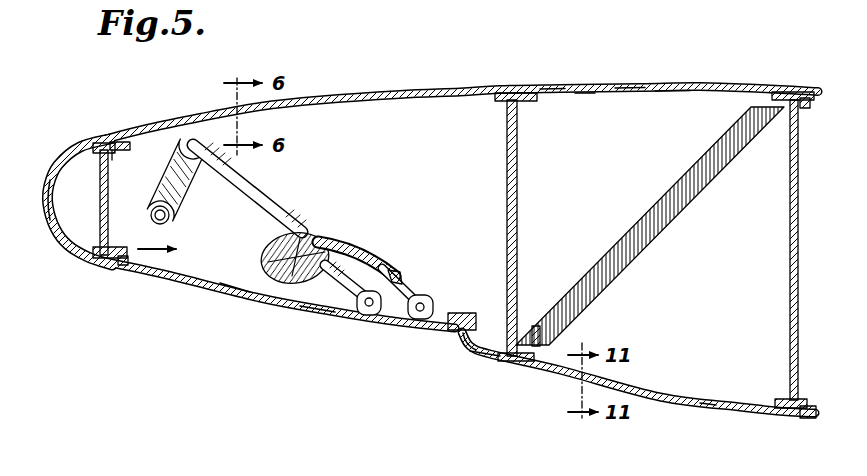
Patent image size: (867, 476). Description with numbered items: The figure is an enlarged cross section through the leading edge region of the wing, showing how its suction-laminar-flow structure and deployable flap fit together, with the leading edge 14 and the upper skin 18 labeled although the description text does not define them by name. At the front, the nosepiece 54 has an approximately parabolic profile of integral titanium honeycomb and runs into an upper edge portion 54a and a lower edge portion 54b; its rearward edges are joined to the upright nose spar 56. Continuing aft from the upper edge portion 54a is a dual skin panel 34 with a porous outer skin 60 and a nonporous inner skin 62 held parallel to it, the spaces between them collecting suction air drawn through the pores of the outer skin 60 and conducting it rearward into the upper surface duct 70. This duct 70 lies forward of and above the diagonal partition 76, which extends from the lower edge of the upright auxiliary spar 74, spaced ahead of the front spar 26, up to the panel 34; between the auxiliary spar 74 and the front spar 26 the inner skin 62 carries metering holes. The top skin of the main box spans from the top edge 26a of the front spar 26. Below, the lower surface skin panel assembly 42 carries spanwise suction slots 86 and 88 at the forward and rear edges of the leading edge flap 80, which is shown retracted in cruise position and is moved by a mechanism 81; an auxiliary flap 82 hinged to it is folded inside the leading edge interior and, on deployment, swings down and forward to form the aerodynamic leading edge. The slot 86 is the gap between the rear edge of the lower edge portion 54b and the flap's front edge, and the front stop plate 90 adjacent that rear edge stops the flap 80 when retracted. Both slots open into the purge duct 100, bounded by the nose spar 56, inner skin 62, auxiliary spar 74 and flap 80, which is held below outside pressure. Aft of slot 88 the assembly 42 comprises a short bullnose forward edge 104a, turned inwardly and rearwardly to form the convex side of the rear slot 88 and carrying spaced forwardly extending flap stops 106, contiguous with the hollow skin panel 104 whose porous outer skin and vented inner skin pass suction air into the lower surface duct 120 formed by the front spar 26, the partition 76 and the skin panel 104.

The leading edge 14 is at (55, 170).
The upper skin 18 is at (331, 90).
The front spar 26 is at (790, 243).
The top edge of front spar 26a is at (800, 90).
The dual skin panel 34 is at (555, 83).
The lower surface skin panel assembly 42 is at (483, 370).
The nosepiece 54 is at (80, 146).
The upper edge portion of nosepiece 54a is at (93, 140).
The lower edge portion of nosepiece 54b is at (90, 255).
The nose spar 56 is at (112, 180).
The porous outer skin 60 is at (628, 83).
The nonporous inner skin 62 is at (583, 95).
The upper surface duct 70 is at (665, 108).
The auxiliary spar 74 is at (508, 178).
The partition 76 is at (665, 213).
The leading edge flap 80 is at (315, 316).
The mechanism 81 is at (272, 195).
The auxiliary flap 82 is at (268, 250).
The suction slot 86 is at (122, 263).
The suction slot 88 is at (445, 335).
The front stop plate 90 is at (120, 247).
The purge duct 100 is at (233, 282).
The skin panel 104 is at (537, 372).
The forward edge 104a is at (470, 354).
The flap stops 106 is at (465, 312).
The lower surface duct 120 is at (708, 402).